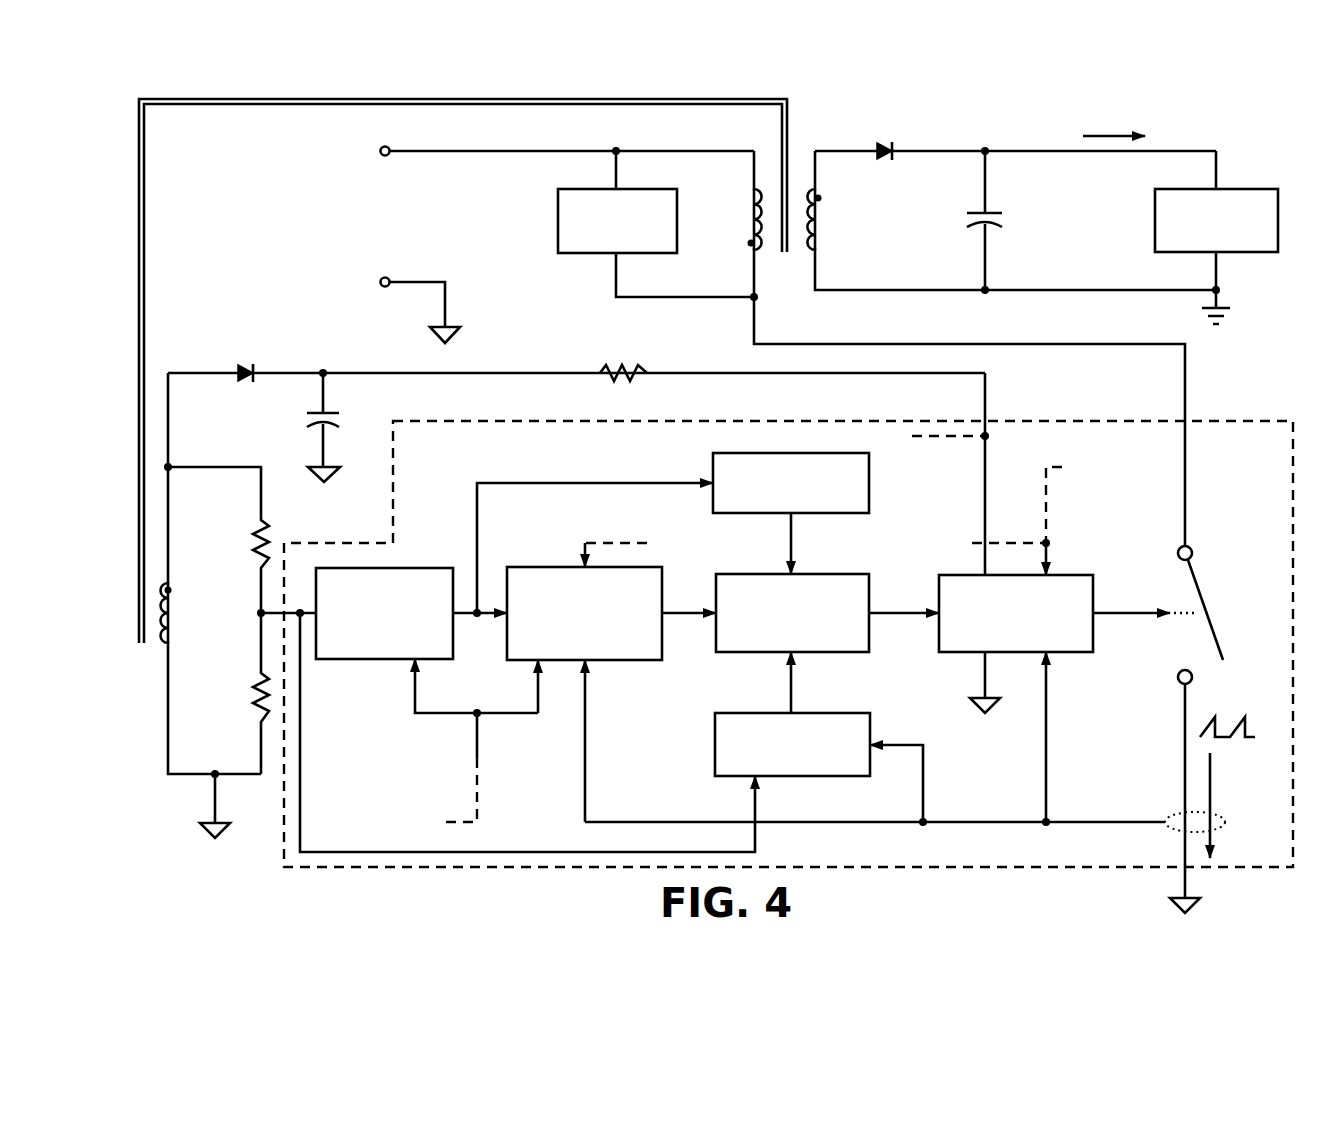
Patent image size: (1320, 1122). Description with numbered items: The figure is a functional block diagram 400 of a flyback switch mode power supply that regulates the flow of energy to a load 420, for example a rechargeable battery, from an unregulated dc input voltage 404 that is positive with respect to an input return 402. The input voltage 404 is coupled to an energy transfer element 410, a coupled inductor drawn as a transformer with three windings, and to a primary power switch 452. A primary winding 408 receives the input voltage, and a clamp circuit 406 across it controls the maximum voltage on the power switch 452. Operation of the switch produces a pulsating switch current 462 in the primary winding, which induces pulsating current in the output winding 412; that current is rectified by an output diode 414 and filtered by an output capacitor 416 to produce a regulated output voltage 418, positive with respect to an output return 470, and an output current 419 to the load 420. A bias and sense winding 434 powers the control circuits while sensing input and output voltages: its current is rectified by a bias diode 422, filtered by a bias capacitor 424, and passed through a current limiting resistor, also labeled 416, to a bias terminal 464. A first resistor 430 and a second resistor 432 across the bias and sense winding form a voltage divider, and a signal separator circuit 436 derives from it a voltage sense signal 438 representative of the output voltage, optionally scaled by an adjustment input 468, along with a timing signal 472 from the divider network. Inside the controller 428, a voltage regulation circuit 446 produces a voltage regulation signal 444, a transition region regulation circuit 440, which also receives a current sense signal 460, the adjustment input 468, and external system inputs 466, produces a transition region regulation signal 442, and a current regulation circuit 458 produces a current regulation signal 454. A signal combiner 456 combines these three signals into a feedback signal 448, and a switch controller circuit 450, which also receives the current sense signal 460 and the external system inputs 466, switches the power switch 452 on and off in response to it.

The functional block diagram 400 is at (261, 223).
The input return 402 is at (435, 336).
The input voltage HV_IN 404 is at (422, 227).
The clamp circuit 406 is at (582, 262).
The primary winding 408 is at (762, 225).
The energy transfer element T1 410 is at (842, 122).
The output winding 412 is at (810, 222).
The diode D1 414 is at (890, 165).
The capacitor C1 416 is at (966, 216).
The output voltage V_O 418 is at (1115, 228).
The output current I_O 419 is at (1085, 122).
The load 420 is at (1235, 183).
The diode D2 422 is at (245, 388).
The capacitor C2 424 is at (304, 421).
The controller 428 is at (1225, 416).
The resistor R1 430 is at (242, 540).
The resistor R2 432 is at (243, 695).
The bias and sense winding 434 is at (165, 612).
The signal separator circuit 436 is at (405, 562).
The voltage sense signal 438 is at (545, 490).
The transition region regulation circuit 440 is at (618, 665).
The transition region regulation signal S2 442 is at (680, 605).
The voltage regulation signal S3 444 is at (785, 546).
The voltage regulation circuit 446 is at (878, 480).
The feedback signal S_FB 448 is at (905, 605).
The switch controller circuit 450 is at (1082, 660).
The power switch SW1 452 is at (1215, 598).
The current regulation signal S1 454 is at (785, 684).
The signal combiner 456 is at (845, 660).
The current regulation circuit 458 is at (710, 743).
The current sense signal 460 is at (578, 743).
The switch current I_P 462 is at (1218, 791).
The bias terminal 464 is at (995, 400).
The external system inputs 466 is at (1055, 560).
The adjustment input 468 is at (472, 742).
The output return 470 is at (1235, 322).
The signal from voltage divider network 472 is at (305, 675).